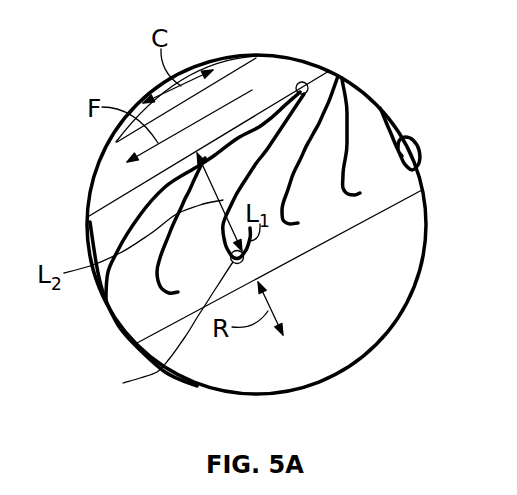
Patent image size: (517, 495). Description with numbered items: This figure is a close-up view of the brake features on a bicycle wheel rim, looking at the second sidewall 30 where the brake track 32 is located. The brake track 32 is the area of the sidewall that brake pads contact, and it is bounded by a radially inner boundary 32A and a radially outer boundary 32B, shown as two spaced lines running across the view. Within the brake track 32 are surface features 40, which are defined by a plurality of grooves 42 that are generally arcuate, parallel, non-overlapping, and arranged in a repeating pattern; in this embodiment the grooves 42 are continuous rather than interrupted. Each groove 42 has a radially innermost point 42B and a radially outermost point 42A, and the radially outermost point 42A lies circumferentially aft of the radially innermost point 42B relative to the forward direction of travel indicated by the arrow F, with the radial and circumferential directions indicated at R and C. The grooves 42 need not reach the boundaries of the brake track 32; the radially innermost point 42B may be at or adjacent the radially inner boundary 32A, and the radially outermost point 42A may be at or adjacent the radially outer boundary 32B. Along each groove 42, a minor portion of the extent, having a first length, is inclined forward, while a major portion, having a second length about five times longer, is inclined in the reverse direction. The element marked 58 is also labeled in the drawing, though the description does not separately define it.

The second sidewall 30 is at (121, 327).
The brake track 32 is at (383, 128).
The radially inner boundary 32A is at (281, 263).
The radially outer boundary 32B is at (263, 111).
The surface features 40 is at (322, 218).
The grooves 42 is at (322, 112).
The radially outermost point 42A is at (307, 82).
The radially innermost point 42B is at (155, 329).
The sipe end portion 58 is at (370, 196).